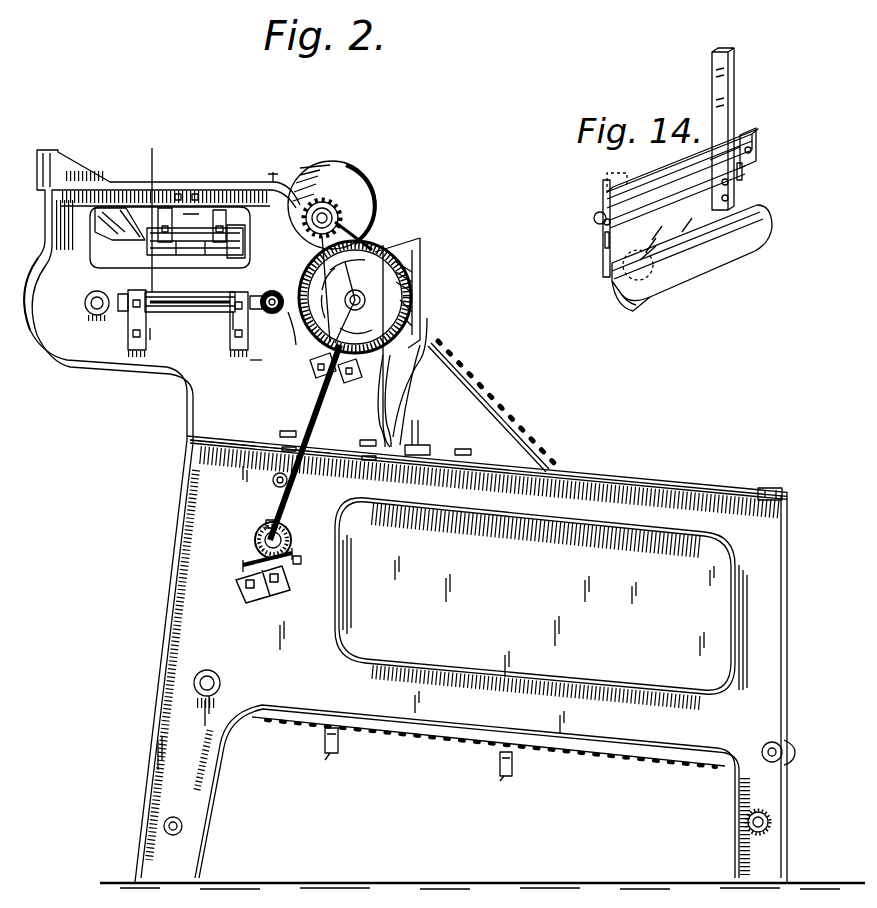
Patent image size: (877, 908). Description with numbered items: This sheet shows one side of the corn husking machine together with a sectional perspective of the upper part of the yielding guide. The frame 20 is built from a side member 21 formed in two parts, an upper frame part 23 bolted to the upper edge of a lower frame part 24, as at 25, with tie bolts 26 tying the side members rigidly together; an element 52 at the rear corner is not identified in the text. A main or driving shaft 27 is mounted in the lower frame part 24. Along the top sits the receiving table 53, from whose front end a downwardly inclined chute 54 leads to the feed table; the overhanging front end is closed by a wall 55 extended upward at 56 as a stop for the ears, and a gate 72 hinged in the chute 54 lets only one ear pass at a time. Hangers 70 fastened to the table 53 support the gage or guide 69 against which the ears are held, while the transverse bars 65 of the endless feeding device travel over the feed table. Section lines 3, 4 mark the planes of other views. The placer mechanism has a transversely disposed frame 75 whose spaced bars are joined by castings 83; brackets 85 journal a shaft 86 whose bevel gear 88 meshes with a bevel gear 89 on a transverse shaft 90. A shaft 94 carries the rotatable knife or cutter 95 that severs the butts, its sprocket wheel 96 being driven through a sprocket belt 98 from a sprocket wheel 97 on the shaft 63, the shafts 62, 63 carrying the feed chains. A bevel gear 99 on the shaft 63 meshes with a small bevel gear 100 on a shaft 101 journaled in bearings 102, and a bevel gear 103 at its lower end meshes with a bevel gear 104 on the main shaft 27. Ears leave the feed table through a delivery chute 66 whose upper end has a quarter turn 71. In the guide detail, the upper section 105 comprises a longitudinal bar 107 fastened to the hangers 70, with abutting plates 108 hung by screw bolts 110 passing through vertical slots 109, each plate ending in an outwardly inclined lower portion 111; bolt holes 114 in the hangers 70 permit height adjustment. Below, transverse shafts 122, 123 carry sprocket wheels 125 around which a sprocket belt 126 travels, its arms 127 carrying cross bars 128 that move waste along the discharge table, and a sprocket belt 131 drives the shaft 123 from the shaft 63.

In FIG. 2, the section line 3 is at (176, 355).
In FIG. 2, the connecting bar / section line 4 is at (322, 200).
In FIG. 2, the frame 20 is at (186, 450).
In FIG. 2, the side member 21 is at (180, 632).
In FIG. 2, the upper frame part 23 is at (256, 364).
In FIG. 2, the lower frame part 24 is at (517, 600).
In FIG. 2, the bolted connection 25 is at (280, 433).
In FIG. 2, the tie bolts 26 is at (177, 817).
In FIG. 2, the main or driving shaft 27 is at (300, 552).
In FIG. 2, the corner bracket 52 is at (770, 504).
In FIG. 2, the receiving table 53 is at (210, 190).
In FIG. 2, the chute 54 is at (108, 240).
In FIG. 2, the wall 55 is at (38, 335).
In FIG. 2, the stop or abutment 56 is at (44, 176).
In FIG. 2, the shaft 62 is at (93, 312).
In FIG. 2, the shaft 63 is at (362, 294).
In FIG. 2, the shelf 65 is at (188, 256).
In FIG. 2, the delivery chute 66 is at (440, 360).
In FIG. 2, the gage or guide 69 is at (212, 258).
In FIG. 14, the gage or guide 69 is at (732, 194).
In FIG. 2, the hangers 70 is at (167, 208).
In FIG. 14, the hangers 70 is at (730, 88).
In FIG. 2, the quarter turn 71 is at (440, 382).
In FIG. 2, the gate 72 is at (148, 237).
In FIG. 2, the transversely-disposed frame 75 is at (233, 335).
In FIG. 2, the castings 83 is at (190, 312).
In FIG. 2, the brackets 85 is at (138, 300).
In FIG. 2, the shaft 86 is at (126, 316).
In FIG. 2, the bevel gear 88 is at (258, 295).
In FIG. 2, the bevel gears 89 is at (288, 337).
In FIG. 2, the transverse shaft 90 is at (278, 296).
In FIG. 2, the shaft 94 is at (340, 218).
In FIG. 2, the rotatable knife or cutter 95 is at (370, 188).
In FIG. 2, the sprocket wheel 96 is at (336, 186).
In FIG. 2, the sprocket wheel 97 is at (412, 318).
In FIG. 2, the sprocket belt 98 is at (412, 242).
In FIG. 2, the bevel gear 99 is at (366, 300).
In FIG. 2, the bevel gear 100 is at (375, 390).
In FIG. 2, the shaft 101 is at (370, 486).
In FIG. 2, the bearings 102 is at (318, 376).
In FIG. 2, the bevel gear 103 is at (293, 566).
In FIG. 2, the bevel gear 104 is at (258, 538).
In FIG. 2, the upper section 105 is at (245, 236).
In FIG. 14, the upper section 105 is at (652, 180).
In FIG. 14, the longitudinal bar 107 is at (677, 213).
In FIG. 2, the abutting plates 108 is at (185, 216).
In FIG. 14, the abutting plates 108 is at (610, 278).
In FIG. 14, the vertical slots 109 is at (744, 170).
In FIG. 14, the screw bolts 110 is at (594, 220).
In FIG. 14, the inclined lower portion 111 is at (748, 254).
In FIG. 14, the bolt holes 114 is at (727, 185).
In FIG. 2, the transverse shaft 122 is at (218, 680).
In FIG. 2, the transverse shaft 123 is at (762, 750).
In FIG. 2, the sprocket wheels 125 is at (786, 742).
In FIG. 2, the sprocket belt 126 is at (455, 740).
In FIG. 2, the outstanding lugs or arms 127 is at (340, 744).
In FIG. 2, the cross bars 128 is at (330, 756).
In FIG. 2, the sprocket belt 131 is at (508, 420).